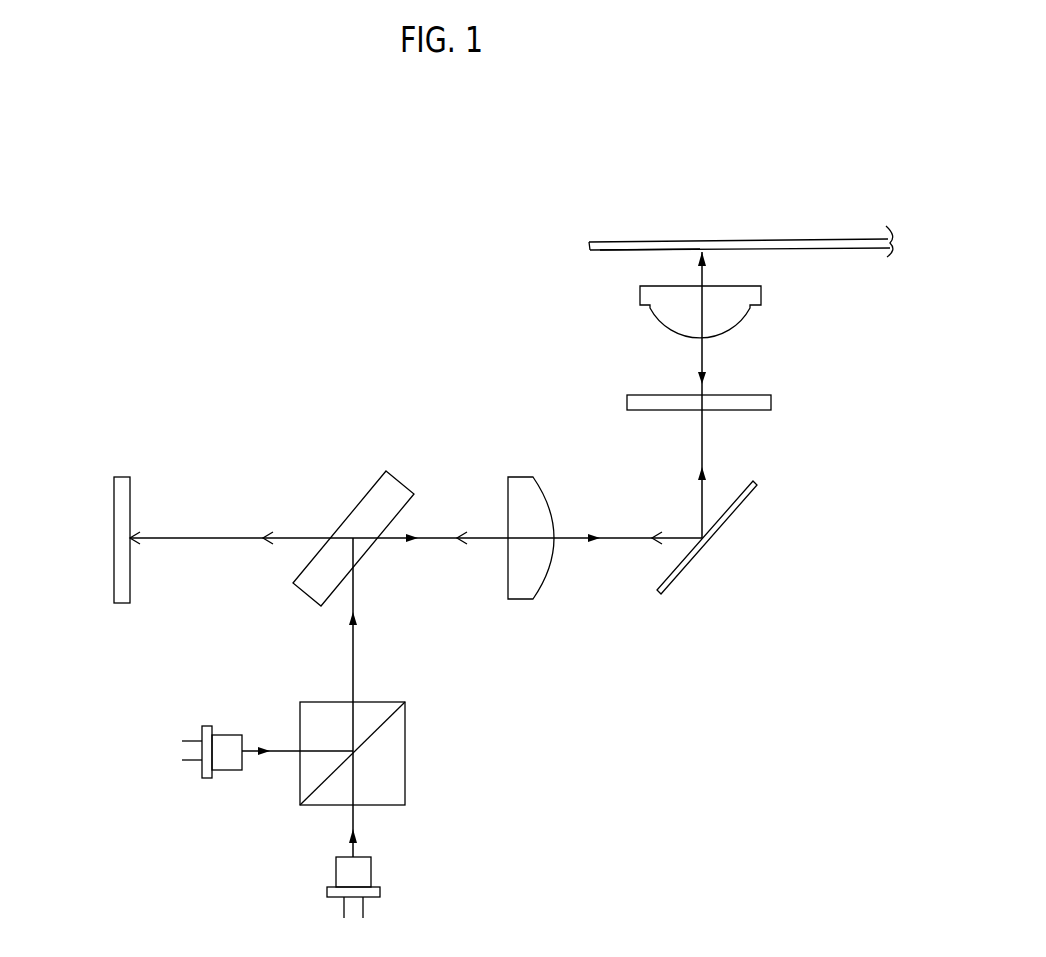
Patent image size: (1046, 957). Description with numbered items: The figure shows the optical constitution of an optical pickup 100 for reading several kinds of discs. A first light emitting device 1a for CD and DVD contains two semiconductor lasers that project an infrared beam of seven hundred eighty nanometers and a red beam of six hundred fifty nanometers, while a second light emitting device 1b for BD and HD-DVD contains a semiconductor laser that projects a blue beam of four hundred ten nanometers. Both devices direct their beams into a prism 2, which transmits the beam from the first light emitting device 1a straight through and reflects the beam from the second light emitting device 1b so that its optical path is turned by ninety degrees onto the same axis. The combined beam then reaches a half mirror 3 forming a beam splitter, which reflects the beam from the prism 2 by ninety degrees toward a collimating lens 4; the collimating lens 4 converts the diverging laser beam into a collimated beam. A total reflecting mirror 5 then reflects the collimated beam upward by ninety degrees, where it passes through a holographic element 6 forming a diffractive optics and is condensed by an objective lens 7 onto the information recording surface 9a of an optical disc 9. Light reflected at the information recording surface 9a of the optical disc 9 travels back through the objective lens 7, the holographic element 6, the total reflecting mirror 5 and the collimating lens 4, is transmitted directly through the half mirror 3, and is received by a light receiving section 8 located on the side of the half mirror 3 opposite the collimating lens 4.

The optical pickup 100 is at (286, 287).
The first light emitting device 1a is at (372, 869).
The second light emitting device 1b is at (231, 735).
The prism 2 is at (407, 752).
The half mirror 3 is at (360, 498).
The collimating lens 4 is at (520, 477).
The total reflecting mirror 5 is at (733, 516).
The holographic element 6 is at (771, 399).
The objective lens 7 is at (762, 289).
The light receiving section 8 is at (114, 521).
The optical disc 9 is at (769, 240).
The information recording surface 9a is at (618, 253).